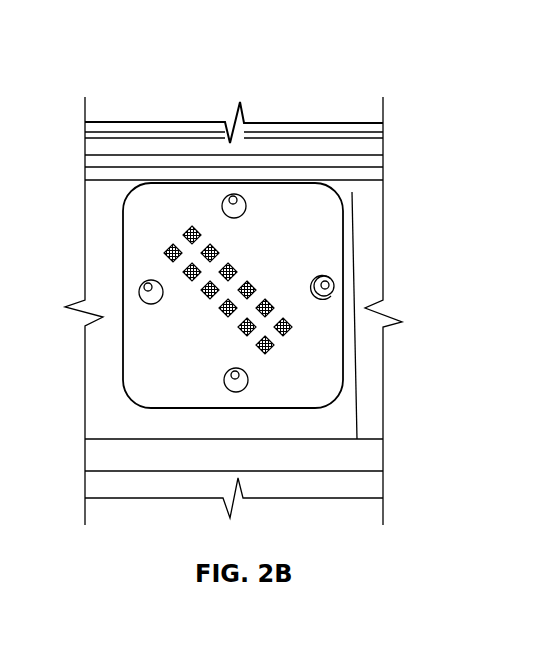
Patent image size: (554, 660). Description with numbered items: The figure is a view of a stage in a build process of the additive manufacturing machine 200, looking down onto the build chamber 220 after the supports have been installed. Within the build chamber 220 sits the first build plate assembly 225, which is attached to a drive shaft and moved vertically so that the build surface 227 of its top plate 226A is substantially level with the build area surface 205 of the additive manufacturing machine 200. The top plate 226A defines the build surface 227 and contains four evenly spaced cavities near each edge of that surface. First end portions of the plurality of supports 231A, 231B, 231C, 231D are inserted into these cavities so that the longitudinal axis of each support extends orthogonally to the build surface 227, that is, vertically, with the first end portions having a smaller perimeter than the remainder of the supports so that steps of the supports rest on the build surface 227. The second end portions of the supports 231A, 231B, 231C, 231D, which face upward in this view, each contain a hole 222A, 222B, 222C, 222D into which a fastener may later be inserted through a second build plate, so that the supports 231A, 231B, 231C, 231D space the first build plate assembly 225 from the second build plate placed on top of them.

The additive manufacturing machine 200 is at (333, 66).
The build area surface 205 is at (351, 238).
The build chamber 220 is at (278, 413).
The hole 222A is at (144, 289).
The hole 222B is at (233, 190).
The hole 222C is at (337, 277).
The hole 222D is at (236, 390).
The first build plate assembly 225 is at (347, 195).
The top plate 226A is at (110, 375).
The build surface 227 is at (288, 201).
The support 231A is at (142, 262).
The support 231B is at (207, 196).
The support 231C is at (330, 308).
The support 231D is at (218, 392).